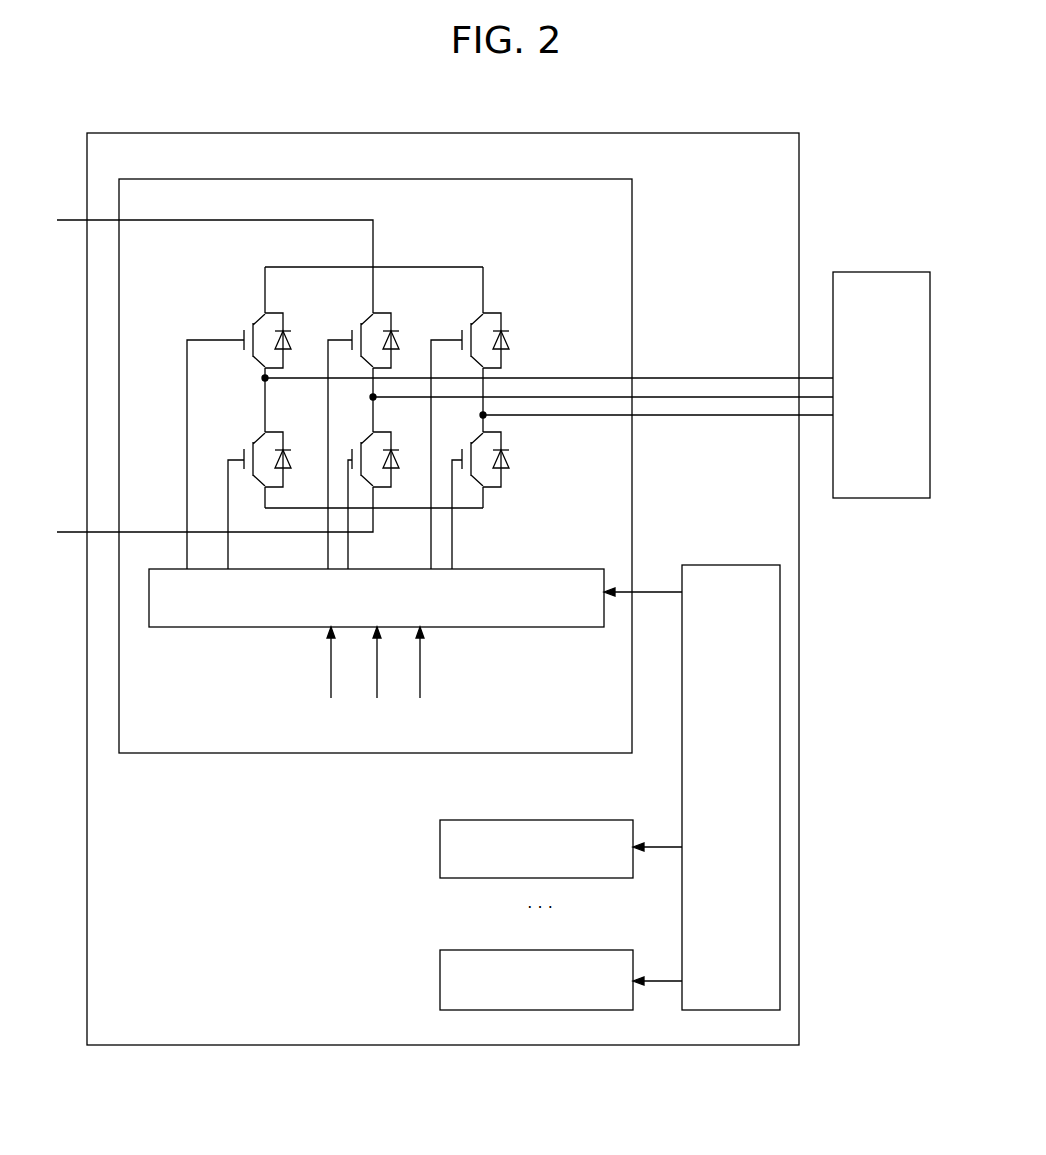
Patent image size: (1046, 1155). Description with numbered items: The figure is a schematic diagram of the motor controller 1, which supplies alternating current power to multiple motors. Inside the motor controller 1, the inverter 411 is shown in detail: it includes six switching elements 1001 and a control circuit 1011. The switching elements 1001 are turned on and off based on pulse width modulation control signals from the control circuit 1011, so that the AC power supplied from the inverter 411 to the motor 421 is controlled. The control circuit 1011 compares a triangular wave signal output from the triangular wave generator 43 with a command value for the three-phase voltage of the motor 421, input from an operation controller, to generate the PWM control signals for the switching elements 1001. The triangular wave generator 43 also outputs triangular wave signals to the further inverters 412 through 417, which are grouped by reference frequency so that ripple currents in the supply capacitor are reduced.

The motor controller 1 is at (800, 188).
The inverter 411 is at (574, 180).
The inverter 412 is at (567, 820).
The inverter 417 is at (567, 950).
The motor 421 is at (870, 272).
The triangular wave generator 43 is at (728, 565).
The switching element 1001 is at (497, 302).
The control circuit 1011 is at (527, 568).